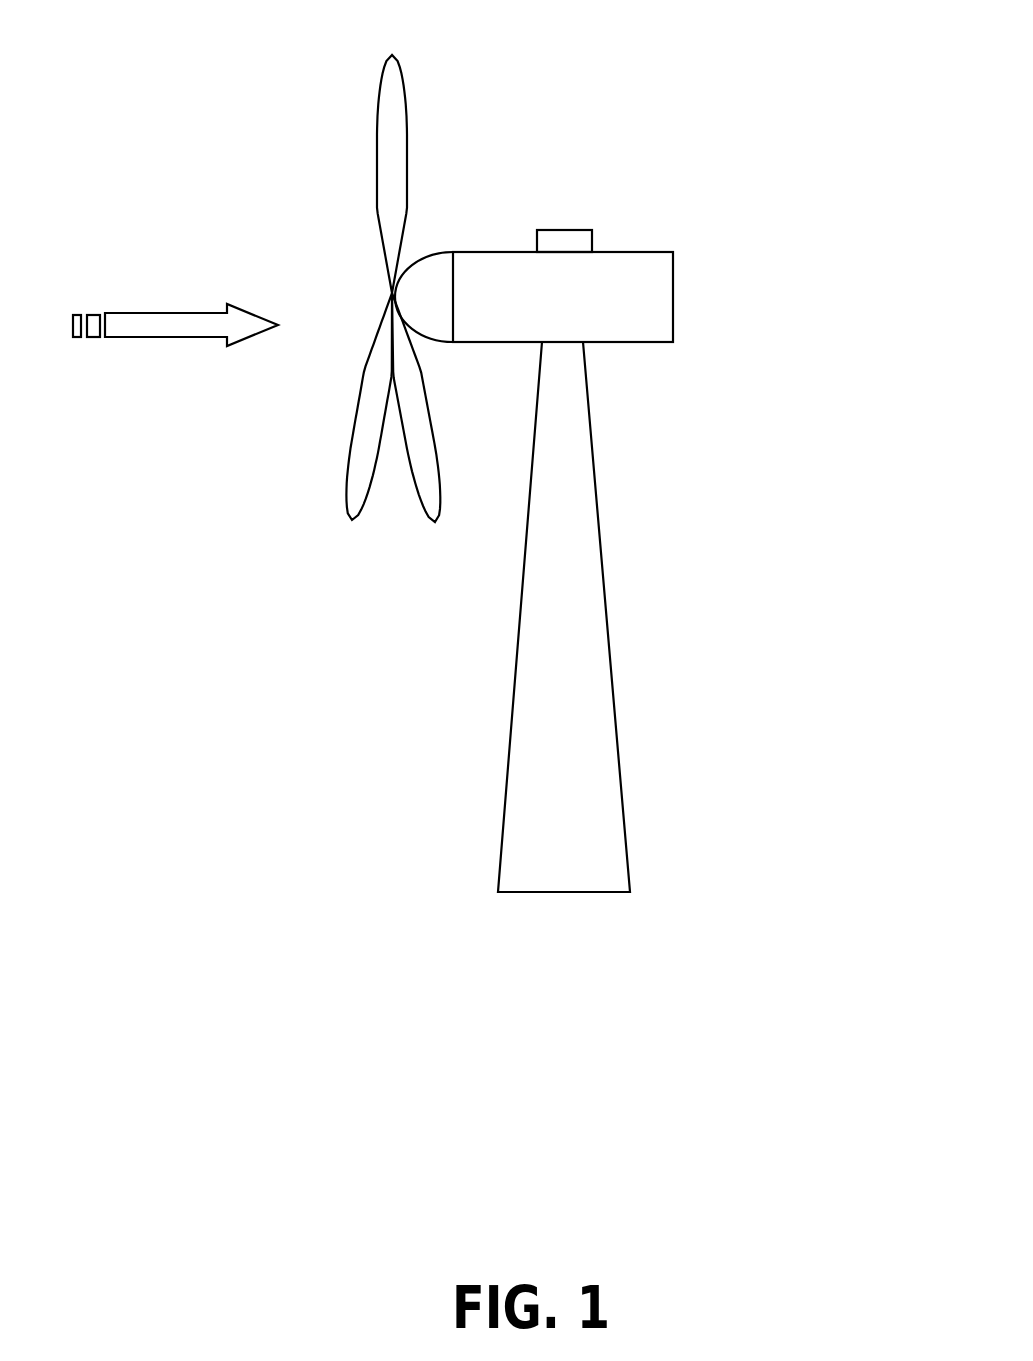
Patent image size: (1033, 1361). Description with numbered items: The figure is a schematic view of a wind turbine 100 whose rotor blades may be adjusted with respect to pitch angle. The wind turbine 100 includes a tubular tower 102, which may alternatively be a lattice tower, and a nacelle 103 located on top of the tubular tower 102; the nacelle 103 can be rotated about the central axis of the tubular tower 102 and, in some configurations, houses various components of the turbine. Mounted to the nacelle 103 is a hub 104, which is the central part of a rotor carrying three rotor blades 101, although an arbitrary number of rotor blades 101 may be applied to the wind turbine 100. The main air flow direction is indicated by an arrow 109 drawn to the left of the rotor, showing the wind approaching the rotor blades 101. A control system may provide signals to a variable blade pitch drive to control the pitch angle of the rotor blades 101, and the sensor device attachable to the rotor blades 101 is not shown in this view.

The wind turbine 100 is at (705, 45).
The rotor blades 101 is at (377, 196).
The tubular tower 102 is at (613, 650).
The nacelle 103 is at (677, 302).
The hub 104 is at (440, 252).
The arrow indicating main air flow direction 109 is at (225, 342).